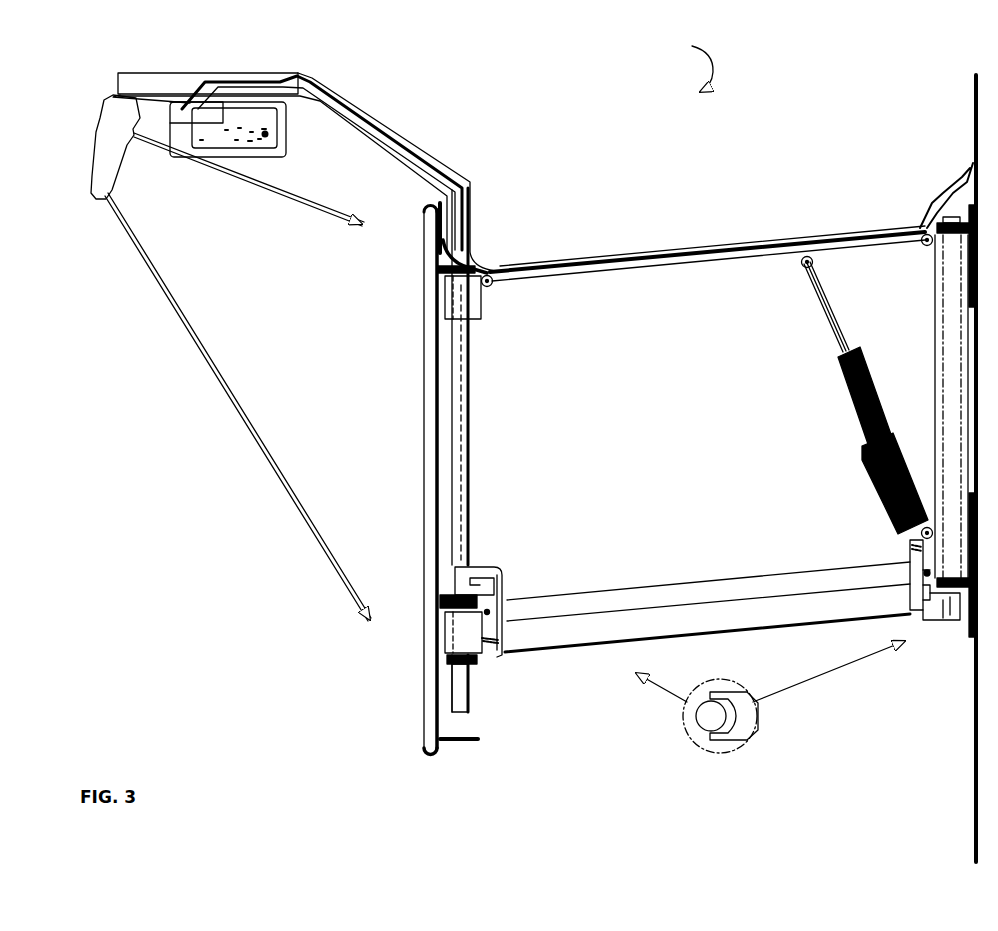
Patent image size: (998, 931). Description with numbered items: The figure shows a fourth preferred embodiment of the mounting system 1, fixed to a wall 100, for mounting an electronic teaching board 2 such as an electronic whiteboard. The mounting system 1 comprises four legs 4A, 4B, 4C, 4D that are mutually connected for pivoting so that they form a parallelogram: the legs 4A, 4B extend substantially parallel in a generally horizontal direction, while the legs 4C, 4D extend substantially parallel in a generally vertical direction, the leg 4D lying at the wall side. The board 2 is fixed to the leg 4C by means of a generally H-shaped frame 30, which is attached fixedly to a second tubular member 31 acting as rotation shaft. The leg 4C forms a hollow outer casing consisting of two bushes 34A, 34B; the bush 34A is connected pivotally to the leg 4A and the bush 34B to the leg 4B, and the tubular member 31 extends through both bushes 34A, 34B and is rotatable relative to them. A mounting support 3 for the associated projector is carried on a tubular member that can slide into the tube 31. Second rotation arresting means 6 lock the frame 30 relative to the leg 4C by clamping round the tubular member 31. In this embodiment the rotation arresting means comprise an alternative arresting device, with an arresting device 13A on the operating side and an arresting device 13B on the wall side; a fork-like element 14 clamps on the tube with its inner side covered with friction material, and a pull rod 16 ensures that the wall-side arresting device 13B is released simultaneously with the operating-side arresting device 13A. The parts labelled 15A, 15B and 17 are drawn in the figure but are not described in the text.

The mounting system 1 is at (703, 58).
The electronic teaching board 2 is at (424, 447).
The mounting support 3 is at (152, 72).
The leg 4A is at (668, 248).
The leg 4B is at (656, 585).
The leg 4C is at (473, 428).
The leg 4D is at (934, 330).
The second rotation arresting means 6 is at (934, 626).
The arresting device on the operating side 13A is at (493, 565).
The arresting device on the wall side 13B is at (908, 599).
The fork-like element 14 is at (732, 736).
The left spring 15A is at (488, 652).
The right spring 15B is at (908, 549).
The pull rod 16 is at (726, 638).
The foot 17 is at (480, 745).
The frame 30 is at (92, 202).
The second tubular member 31 is at (462, 392).
The bush 34A is at (462, 300).
The bush 34B is at (462, 630).
The wall 100 is at (974, 96).